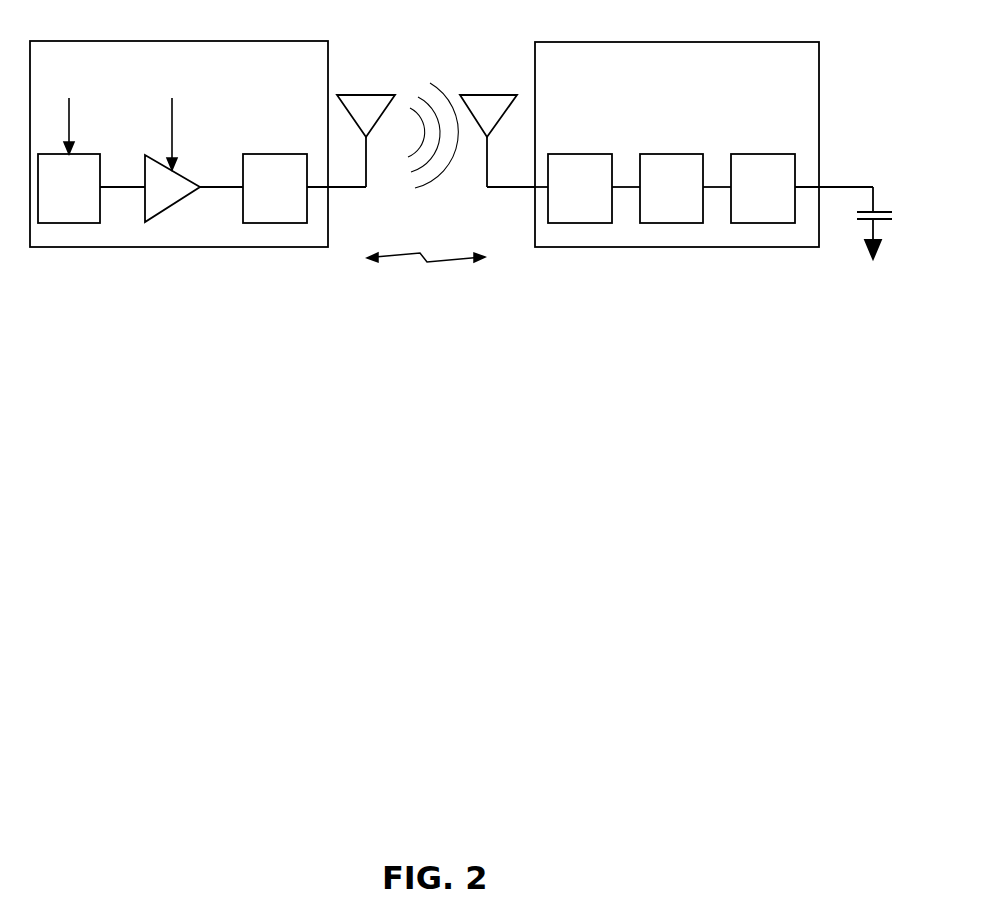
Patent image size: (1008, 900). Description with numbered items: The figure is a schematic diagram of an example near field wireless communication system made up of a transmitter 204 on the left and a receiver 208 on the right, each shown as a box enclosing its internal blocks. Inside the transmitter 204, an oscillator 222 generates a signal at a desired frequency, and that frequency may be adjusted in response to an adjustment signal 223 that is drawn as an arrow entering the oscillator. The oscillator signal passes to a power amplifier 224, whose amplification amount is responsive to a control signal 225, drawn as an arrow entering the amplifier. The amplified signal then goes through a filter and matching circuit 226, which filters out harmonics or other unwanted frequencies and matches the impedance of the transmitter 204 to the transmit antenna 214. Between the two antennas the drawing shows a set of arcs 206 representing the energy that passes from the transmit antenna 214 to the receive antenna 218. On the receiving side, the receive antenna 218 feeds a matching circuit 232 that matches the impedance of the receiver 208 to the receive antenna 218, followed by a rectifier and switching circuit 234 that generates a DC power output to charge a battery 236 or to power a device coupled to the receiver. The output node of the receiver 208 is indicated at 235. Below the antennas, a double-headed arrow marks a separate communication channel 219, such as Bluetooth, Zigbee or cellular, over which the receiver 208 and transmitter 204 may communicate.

The transmitter 204 is at (163, 71).
The oscillator 222 is at (54, 215).
The adjustment signal 223 is at (69, 108).
The power amplifier 224 is at (180, 196).
The control signal 225 is at (172, 108).
The filter and matching circuit 226 is at (259, 196).
The transmit antenna 214 is at (345, 95).
The wireless power signal 206 is at (432, 186).
The receive antenna 218 is at (502, 95).
The communication channel 219 is at (431, 277).
The receiver 208 is at (661, 71).
The matching circuit 232 is at (564, 198).
The rectifier and switching circuit 234 is at (688, 198).
The battery 236 is at (747, 198).
The output terminal / load 235 is at (833, 187).